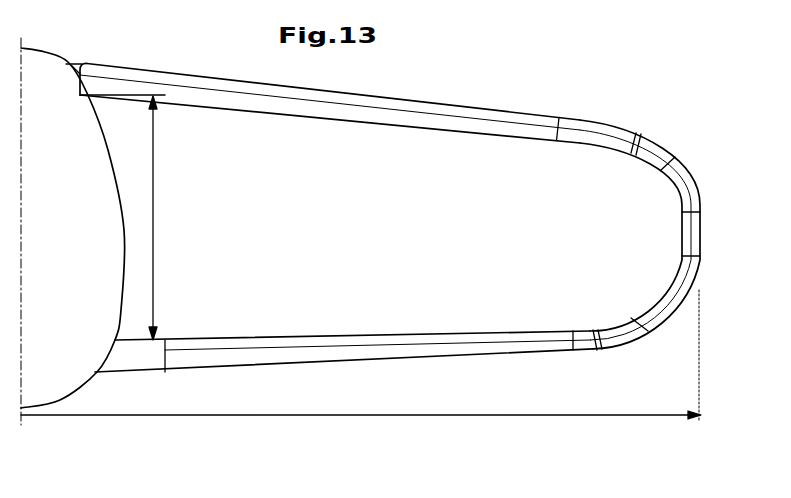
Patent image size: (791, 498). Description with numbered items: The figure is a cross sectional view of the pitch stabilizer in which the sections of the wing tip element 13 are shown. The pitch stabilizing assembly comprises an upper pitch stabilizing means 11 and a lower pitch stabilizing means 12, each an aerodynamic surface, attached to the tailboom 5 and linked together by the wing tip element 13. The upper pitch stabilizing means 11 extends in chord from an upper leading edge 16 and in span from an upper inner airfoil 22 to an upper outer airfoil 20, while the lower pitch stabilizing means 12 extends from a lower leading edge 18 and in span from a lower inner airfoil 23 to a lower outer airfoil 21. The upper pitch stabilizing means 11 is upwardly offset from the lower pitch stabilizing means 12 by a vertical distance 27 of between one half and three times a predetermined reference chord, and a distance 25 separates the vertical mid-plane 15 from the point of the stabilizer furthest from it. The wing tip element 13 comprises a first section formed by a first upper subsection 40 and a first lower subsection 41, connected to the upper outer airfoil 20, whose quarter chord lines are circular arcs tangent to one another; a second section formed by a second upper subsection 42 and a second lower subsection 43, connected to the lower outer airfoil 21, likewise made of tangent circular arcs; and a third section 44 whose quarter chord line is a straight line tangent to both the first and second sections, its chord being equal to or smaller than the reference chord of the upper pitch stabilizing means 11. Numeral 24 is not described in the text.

The tailboom 5 is at (107, 138).
The upper pitch stabilizing means 11 is at (268, 106).
The lower pitch stabilizing means 12 is at (367, 366).
The wing tip element 13 is at (672, 235).
The vertical mid-plane 15 is at (21, 199).
The upper leading edge 16 is at (385, 104).
The lower leading edge 18 is at (249, 349).
The upper outer airfoil 20 is at (530, 113).
The lower outer airfoil 21 is at (558, 348).
The upper inner airfoil 22 is at (143, 97).
The lower inner airfoil 23 is at (167, 360).
The inner surface of curved portion 24 is at (680, 197).
The distance 25 is at (313, 415).
The vertical distance 27 is at (155, 202).
The first upper subsection 40 is at (613, 125).
The first lower subsection 41 is at (694, 178).
The second upper subsection 42 is at (685, 303).
The second lower subsection 43 is at (626, 340).
The third section 44 is at (703, 225).